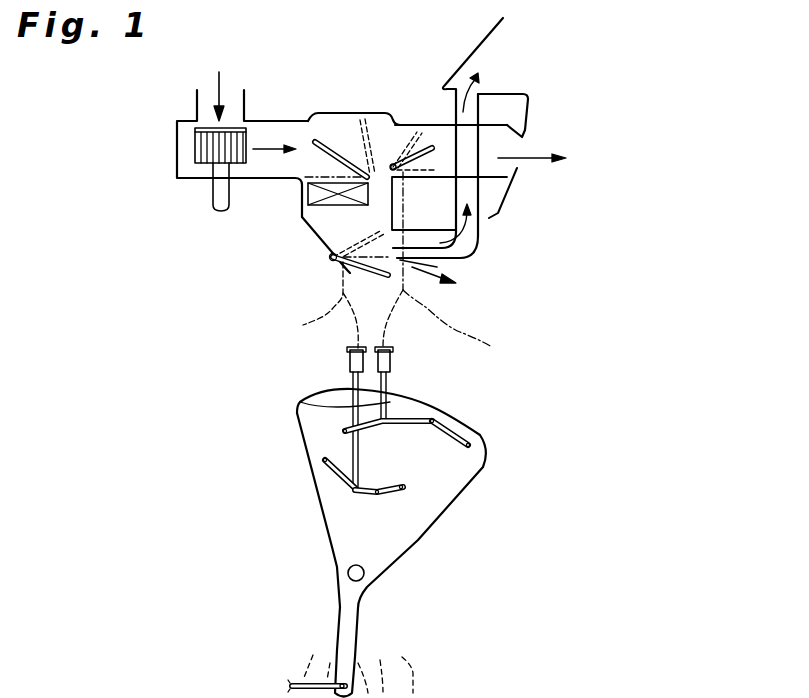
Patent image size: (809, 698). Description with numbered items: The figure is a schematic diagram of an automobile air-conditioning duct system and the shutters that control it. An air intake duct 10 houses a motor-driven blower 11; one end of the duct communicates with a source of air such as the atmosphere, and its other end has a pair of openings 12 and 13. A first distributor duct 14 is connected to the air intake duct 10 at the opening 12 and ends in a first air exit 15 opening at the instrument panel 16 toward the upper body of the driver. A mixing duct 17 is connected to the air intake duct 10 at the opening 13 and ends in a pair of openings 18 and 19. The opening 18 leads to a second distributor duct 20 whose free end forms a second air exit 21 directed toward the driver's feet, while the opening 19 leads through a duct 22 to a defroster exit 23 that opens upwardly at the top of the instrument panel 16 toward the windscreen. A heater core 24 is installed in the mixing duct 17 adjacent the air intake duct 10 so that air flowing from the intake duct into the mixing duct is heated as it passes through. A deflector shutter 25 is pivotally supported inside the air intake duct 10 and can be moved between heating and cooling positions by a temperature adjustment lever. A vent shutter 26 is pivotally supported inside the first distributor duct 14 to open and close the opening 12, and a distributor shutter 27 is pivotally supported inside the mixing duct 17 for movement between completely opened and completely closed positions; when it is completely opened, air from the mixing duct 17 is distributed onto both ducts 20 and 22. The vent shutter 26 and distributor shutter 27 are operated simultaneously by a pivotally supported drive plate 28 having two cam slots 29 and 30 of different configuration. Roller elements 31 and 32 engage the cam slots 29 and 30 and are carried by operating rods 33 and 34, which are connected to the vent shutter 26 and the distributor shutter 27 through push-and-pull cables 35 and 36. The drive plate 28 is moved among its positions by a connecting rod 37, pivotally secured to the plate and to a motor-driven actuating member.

The air intake duct 10 is at (267, 120).
The motor-driven blower 11 is at (195, 141).
The opening 12 is at (387, 124).
The opening 13 is at (366, 123).
The first distributor duct 14 is at (446, 108).
The first air exit 15 is at (517, 167).
The instrument panel 16 is at (530, 97).
The mixing duct 17 is at (303, 214).
The opening 18 is at (437, 267).
The opening 19 is at (443, 245).
The second distributor duct 20 is at (413, 287).
The second air exit 21 is at (415, 287).
The duct 22 is at (481, 235).
The defroster exit 23 is at (474, 94).
The heater core 24 is at (305, 193).
The deflector shutter 25 is at (329, 135).
The vent shutter 26 is at (439, 145).
The distributor shutter 27 is at (347, 273).
The drive plate 28 is at (387, 542).
The cam slot 29 is at (471, 430).
The cam slot 30 is at (345, 482).
The roller element 31 is at (398, 396).
The roller element 32 is at (352, 494).
The operating rod 33 is at (391, 378).
The operating rod 34 is at (300, 402).
The push-and-pull cable 35 is at (456, 273).
The push-and-pull cable 36 is at (303, 325).
The connecting rod 37 is at (295, 683).